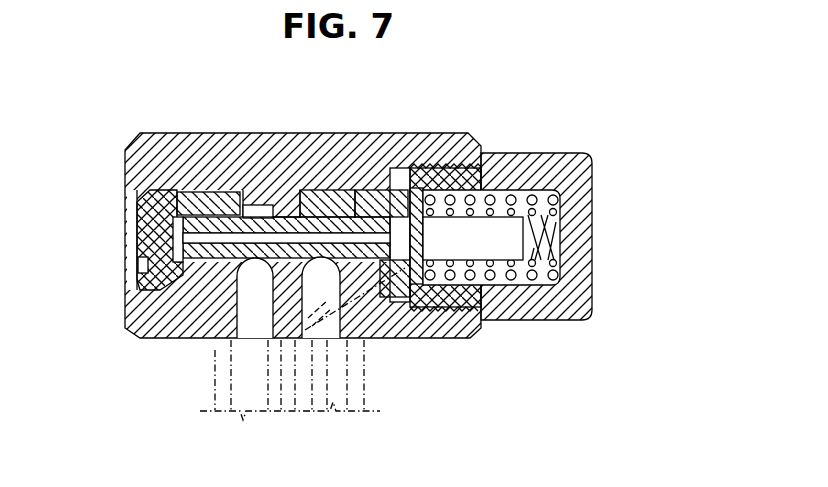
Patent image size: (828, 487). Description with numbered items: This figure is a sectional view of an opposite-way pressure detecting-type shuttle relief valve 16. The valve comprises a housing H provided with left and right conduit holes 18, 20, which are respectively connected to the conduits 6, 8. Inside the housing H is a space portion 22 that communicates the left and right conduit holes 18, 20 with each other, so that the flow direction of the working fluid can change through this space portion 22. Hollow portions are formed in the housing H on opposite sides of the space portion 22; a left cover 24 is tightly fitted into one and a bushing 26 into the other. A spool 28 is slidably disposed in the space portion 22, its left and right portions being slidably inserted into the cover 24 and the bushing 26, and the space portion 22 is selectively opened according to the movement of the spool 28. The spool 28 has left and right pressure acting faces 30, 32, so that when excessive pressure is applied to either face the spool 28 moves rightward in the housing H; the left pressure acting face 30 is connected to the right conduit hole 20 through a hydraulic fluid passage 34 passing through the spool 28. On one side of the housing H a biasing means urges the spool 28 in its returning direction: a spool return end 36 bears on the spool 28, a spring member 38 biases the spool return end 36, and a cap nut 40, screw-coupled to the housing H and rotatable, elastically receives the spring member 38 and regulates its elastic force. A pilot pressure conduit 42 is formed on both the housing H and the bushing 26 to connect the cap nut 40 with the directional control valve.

The housing H is at (140, 134).
The relief valve 16 is at (628, 142).
The bushing 26 is at (398, 133).
The left cover 24 is at (142, 237).
The left pressure acting face 30 is at (142, 259).
The spool 28 is at (172, 190).
The space portion 22 is at (240, 208).
The right pressure acting face 32 is at (256, 205).
The hydraulic fluid passage 34 is at (342, 198).
The left conduit hole 18 is at (248, 316).
The right conduit hole 20 is at (320, 300).
The pilot pressure conduit 42 is at (346, 324).
The spring member 38 is at (570, 153).
The cap nut 40 is at (592, 228).
The spool return end 36 is at (492, 222).
The conduit 6 is at (197, 390).
The conduit 8 is at (360, 388).